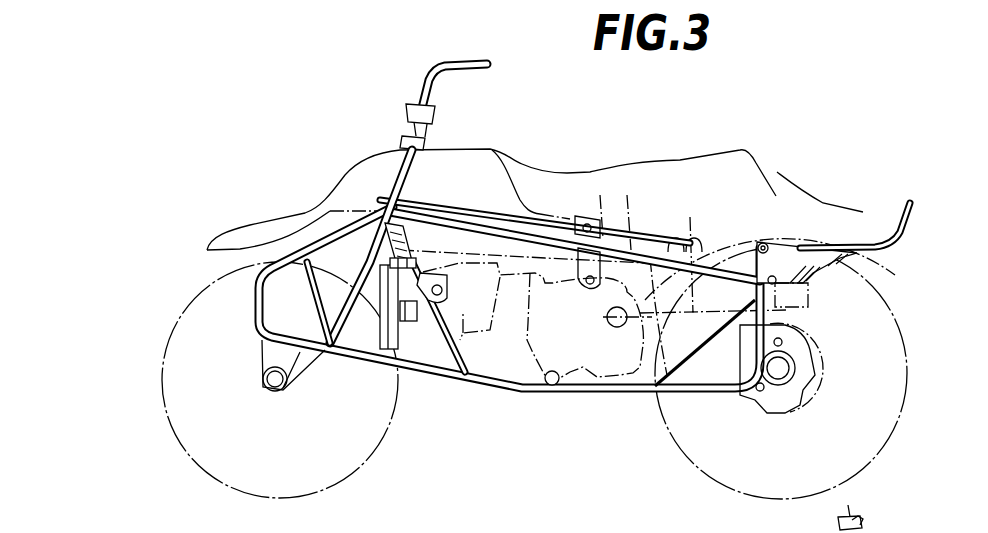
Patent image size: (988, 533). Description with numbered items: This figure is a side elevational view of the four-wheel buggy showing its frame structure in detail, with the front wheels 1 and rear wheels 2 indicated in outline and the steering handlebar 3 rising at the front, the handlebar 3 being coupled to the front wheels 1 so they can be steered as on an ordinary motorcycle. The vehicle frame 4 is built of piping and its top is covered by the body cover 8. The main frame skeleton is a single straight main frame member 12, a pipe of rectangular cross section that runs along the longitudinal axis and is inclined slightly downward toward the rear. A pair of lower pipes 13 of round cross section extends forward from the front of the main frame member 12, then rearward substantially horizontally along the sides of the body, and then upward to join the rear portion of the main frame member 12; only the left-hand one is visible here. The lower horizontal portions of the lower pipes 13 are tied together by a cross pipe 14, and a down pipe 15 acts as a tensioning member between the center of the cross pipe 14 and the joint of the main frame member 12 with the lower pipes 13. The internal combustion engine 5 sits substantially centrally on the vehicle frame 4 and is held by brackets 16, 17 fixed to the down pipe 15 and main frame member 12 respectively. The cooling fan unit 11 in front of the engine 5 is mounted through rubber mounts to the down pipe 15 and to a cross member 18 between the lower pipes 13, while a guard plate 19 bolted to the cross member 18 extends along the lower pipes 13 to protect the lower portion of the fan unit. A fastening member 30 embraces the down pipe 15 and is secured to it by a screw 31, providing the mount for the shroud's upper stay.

The front wheels 1 is at (290, 484).
The rear wheels 2 is at (703, 460).
The steering handlebar 3 is at (463, 62).
The vehicle frame 4 is at (542, 396).
The internal combustion engine 5 is at (510, 325).
The body cover 8 is at (507, 140).
The cooling fan unit 11 is at (391, 358).
The main frame member 12 is at (628, 242).
The lower pipes 13 is at (602, 381).
The cross pipe 14 is at (457, 373).
The down pipe 15 is at (400, 232).
The bracket 16 is at (434, 270).
The bracket 17 is at (600, 216).
The cross member 18 is at (385, 362).
The guard plate 19 is at (356, 357).
The fastening member 30 is at (388, 263).
The screw 31 is at (890, 532).